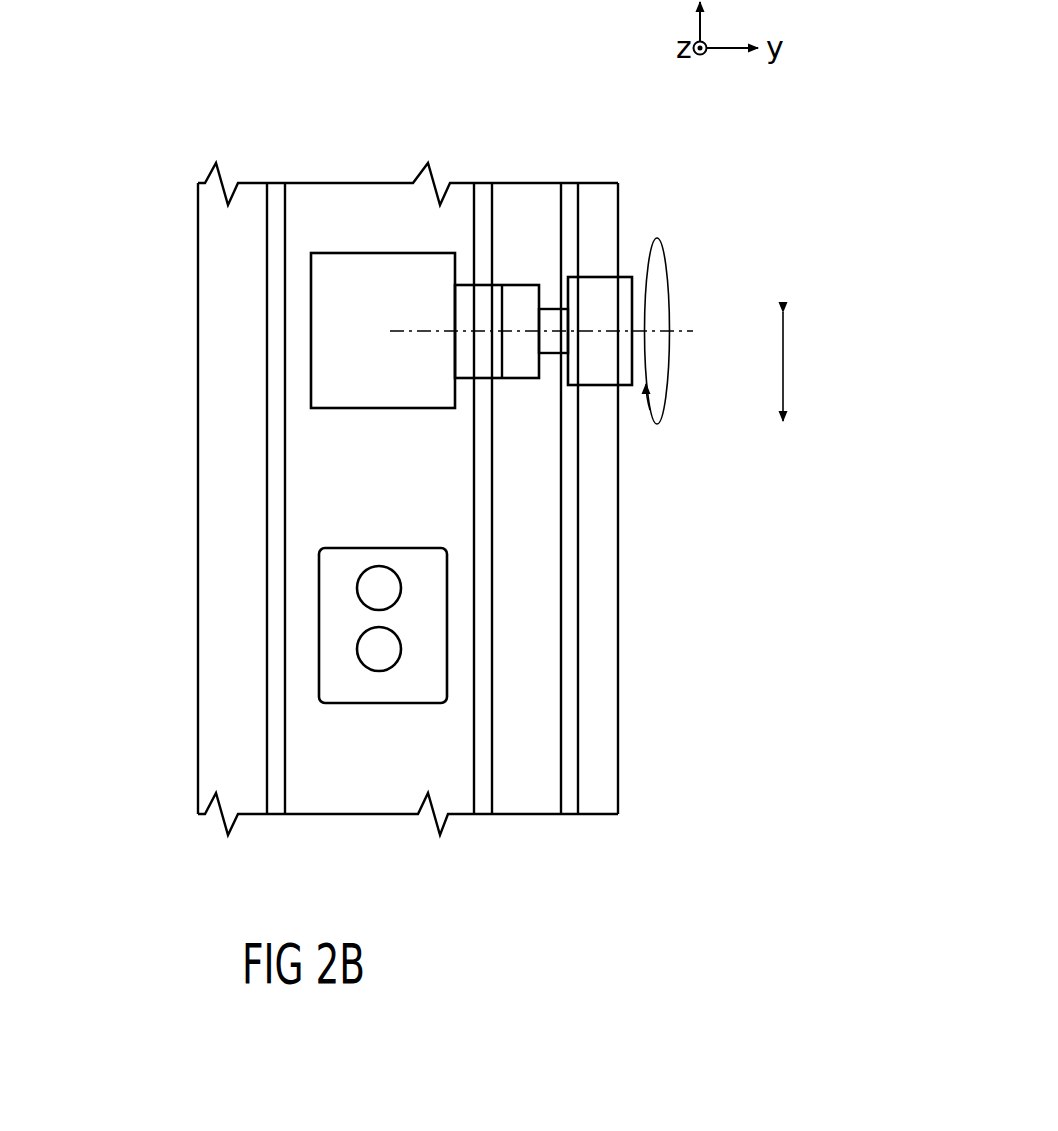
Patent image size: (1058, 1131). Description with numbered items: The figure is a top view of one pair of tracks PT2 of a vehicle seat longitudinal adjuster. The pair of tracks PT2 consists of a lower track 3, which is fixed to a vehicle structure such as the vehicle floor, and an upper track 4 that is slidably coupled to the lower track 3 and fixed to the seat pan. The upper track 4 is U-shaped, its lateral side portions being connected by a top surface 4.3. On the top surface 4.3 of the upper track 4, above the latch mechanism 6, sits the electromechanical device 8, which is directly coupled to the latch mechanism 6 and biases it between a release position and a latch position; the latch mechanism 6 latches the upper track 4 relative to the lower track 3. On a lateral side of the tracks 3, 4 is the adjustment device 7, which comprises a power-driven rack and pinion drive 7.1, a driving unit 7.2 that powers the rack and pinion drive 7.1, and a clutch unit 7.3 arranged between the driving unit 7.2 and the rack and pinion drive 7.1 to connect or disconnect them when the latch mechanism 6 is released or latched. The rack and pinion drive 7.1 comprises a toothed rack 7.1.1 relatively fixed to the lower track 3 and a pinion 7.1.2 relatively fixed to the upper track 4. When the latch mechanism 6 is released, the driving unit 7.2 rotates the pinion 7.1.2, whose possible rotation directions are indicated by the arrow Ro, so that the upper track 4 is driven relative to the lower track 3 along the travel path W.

The pair of tracks PT2 is at (173, 161).
The top surface 4.3 is at (322, 197).
The upper track 4 is at (421, 205).
The lower track 3 is at (530, 200).
The adjustment device 7 is at (448, 333).
The rack and pinion drive 7.1 is at (644, 364).
The toothed rack 7.1.1 is at (618, 597).
The pinion 7.1.2 is at (646, 283).
The driving unit 7.2 is at (334, 373).
The clutch unit 7.3 is at (520, 380).
The latch mechanism 6 is at (462, 625).
The electromechanical device 8 is at (316, 660).
The rotation directions Ro is at (672, 308).
The travel path W is at (800, 366).